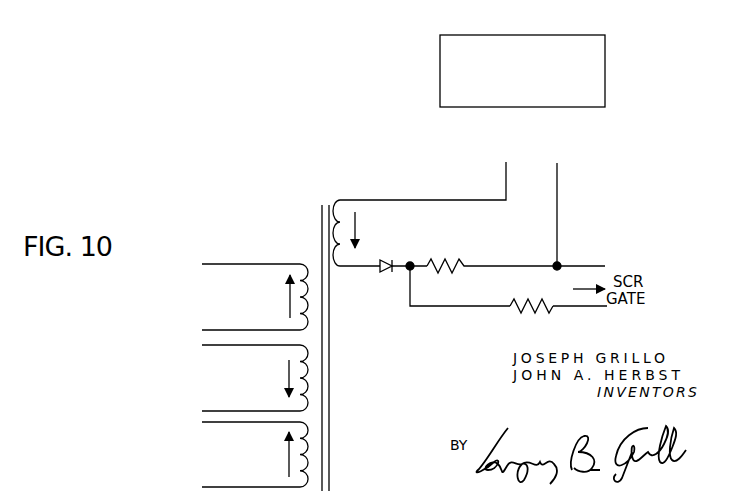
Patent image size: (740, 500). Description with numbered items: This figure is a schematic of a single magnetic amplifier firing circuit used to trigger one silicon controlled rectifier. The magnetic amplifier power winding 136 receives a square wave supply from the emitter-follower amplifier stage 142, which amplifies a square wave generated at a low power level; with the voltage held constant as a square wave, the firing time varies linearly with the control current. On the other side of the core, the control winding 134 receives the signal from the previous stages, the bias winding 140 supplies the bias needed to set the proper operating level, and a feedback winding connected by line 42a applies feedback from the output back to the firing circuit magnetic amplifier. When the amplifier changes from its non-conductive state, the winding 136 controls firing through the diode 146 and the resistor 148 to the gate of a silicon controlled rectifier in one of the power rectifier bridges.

The emitter-follower amplifier stage 142 is at (530, 60).
The magnetic amplifier power winding 136 is at (341, 199).
The diode 146 is at (390, 273).
The resistor 148 is at (536, 312).
The bias winding 140 is at (301, 265).
The control winding 134 is at (302, 347).
The feedback line 42a is at (204, 454).